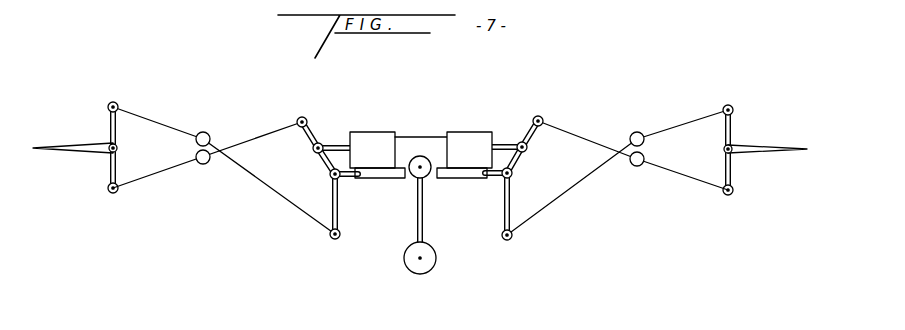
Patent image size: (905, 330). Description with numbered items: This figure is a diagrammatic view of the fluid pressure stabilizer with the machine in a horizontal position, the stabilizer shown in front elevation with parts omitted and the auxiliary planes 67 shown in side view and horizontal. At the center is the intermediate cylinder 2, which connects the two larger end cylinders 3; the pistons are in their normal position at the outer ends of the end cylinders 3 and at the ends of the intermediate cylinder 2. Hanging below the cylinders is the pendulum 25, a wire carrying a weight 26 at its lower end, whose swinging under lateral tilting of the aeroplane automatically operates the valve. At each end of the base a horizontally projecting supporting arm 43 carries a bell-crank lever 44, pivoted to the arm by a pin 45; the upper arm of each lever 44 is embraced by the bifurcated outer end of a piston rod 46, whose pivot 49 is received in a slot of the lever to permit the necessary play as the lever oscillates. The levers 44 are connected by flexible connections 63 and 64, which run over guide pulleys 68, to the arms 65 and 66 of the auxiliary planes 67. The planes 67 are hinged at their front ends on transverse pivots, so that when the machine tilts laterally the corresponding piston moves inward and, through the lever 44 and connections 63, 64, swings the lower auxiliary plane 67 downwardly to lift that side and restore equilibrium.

The intermediate cylinder 2 is at (422, 137).
The end cylinder 3 is at (470, 137).
The pendulum 25 is at (422, 223).
The weight 26 is at (432, 258).
The supporting arm 43 is at (352, 180).
The lever 44 is at (340, 215).
The pin 45 is at (332, 178).
The piston rod 46 is at (333, 145).
The pivot 49 is at (562, 130).
The flexible connection 63 is at (258, 137).
The flexible connection 64 is at (253, 173).
The arm 65 is at (110, 172).
The arm 66 is at (117, 125).
The auxiliary plane 67 is at (63, 145).
The guide pulley 68 is at (200, 167).